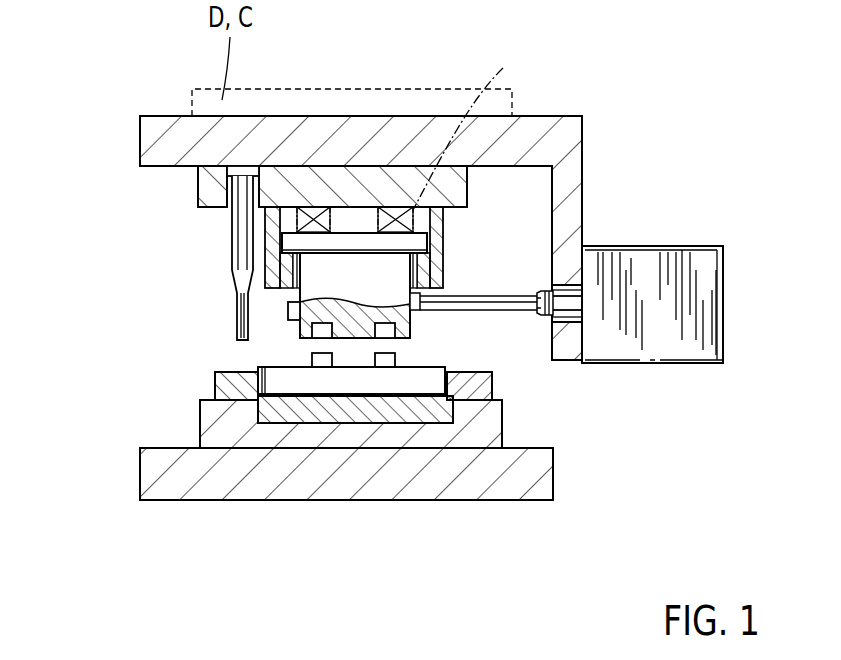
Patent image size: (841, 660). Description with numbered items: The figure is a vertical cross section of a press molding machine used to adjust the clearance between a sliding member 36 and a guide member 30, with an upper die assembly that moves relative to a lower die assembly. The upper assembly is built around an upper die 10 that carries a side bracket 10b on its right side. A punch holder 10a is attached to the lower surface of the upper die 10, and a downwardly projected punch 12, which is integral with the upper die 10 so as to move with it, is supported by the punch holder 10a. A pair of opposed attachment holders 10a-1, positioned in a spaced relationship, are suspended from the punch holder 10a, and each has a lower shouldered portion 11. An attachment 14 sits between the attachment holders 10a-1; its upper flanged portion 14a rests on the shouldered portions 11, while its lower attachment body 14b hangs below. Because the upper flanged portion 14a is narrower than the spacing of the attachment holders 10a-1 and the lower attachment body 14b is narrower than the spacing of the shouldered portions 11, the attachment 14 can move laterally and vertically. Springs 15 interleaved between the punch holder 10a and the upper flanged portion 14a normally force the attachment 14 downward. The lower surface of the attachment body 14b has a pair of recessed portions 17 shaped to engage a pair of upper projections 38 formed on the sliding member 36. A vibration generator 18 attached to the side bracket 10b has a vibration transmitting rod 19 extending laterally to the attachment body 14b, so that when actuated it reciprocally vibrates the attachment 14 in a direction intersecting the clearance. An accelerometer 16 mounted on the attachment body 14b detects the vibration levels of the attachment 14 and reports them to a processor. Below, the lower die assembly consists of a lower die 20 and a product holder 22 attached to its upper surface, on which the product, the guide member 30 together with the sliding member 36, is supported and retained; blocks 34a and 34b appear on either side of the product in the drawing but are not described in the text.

The upper die 10 is at (310, 117).
The punch holder 10a is at (210, 188).
The attachment holder 10a-1 is at (270, 248).
The side bracket 10b is at (568, 192).
The shouldered portion 11 is at (287, 292).
The punch 12 is at (240, 227).
The attachment 14 is at (300, 335).
The upper flanged portion 14a is at (354, 245).
The lower attachment body 14b is at (320, 273).
The spring 15 is at (473, 128).
The accelerometer 16 is at (288, 310).
The recessed portion 17 is at (296, 340).
The vibration generator 18 is at (683, 363).
The vibration transmitting rod 19 is at (467, 302).
The lower die 20 is at (188, 483).
The product holder 22 is at (488, 424).
The guide member 30 is at (367, 417).
The left guide block 34a is at (218, 386).
The right guide block 34b is at (477, 382).
The sliding member 36 is at (303, 380).
The upper projection 38 is at (393, 362).